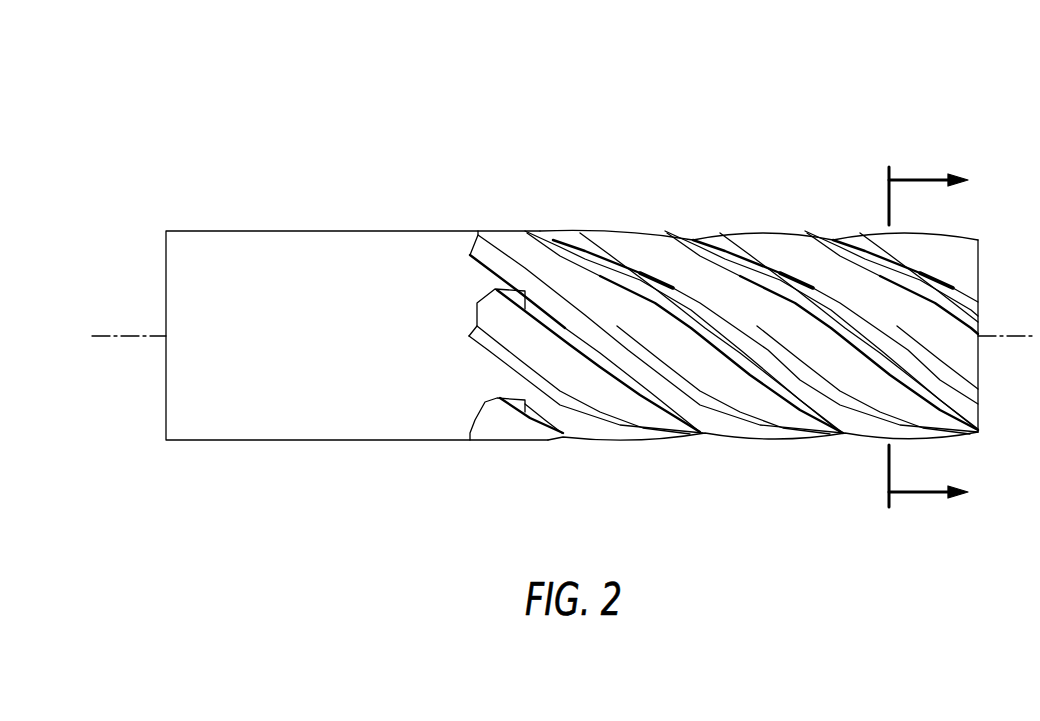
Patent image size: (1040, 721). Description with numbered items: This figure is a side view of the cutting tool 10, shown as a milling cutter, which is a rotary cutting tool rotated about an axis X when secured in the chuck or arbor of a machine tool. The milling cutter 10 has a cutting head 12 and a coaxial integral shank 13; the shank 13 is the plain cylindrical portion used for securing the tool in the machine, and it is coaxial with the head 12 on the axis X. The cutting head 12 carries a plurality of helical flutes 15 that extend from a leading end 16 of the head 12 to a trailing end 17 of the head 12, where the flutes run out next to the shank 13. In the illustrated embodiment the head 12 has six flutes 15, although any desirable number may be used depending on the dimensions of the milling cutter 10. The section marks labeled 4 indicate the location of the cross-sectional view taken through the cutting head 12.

The cutting tool 10 is at (423, 98).
The cutting head 12 is at (772, 226).
The shank 13 is at (312, 248).
The helical flutes 15 is at (778, 256).
The leading end 16 is at (986, 292).
The trailing end 17 is at (473, 310).
The axis X is at (113, 333).
The section line 4- 4 is at (913, 341).